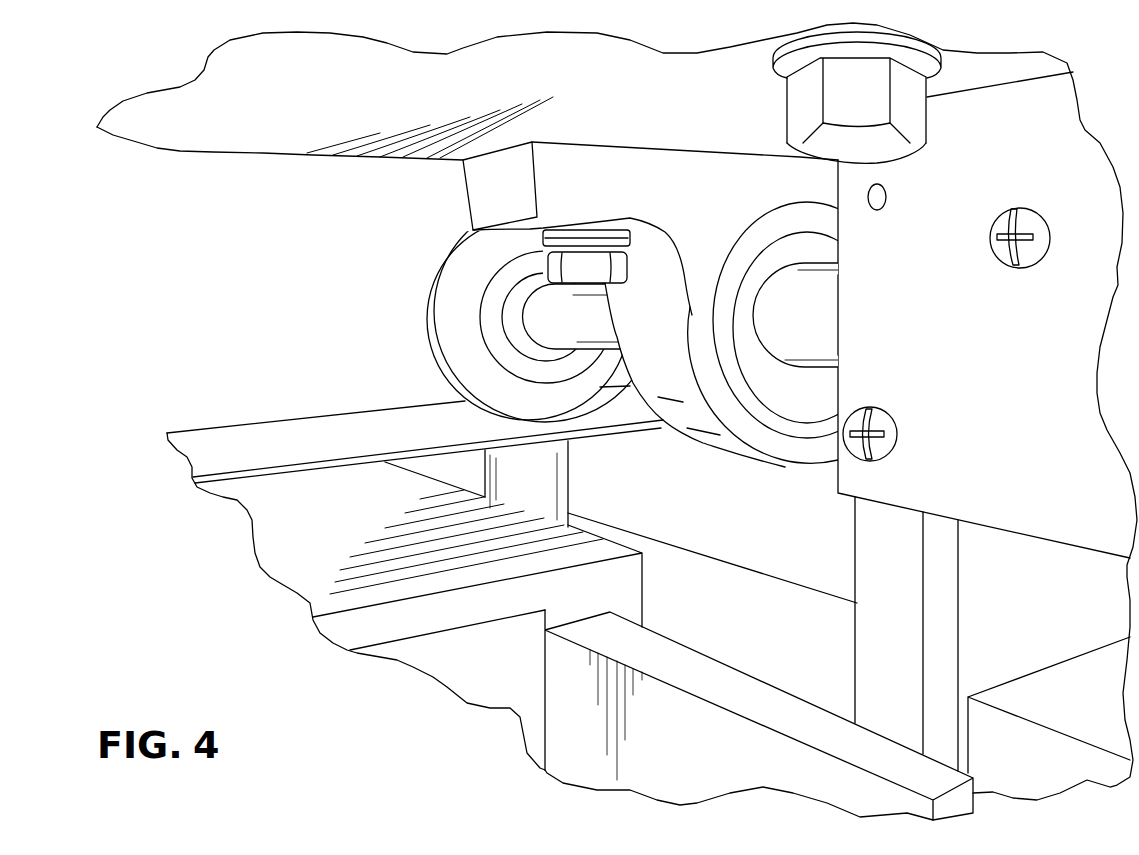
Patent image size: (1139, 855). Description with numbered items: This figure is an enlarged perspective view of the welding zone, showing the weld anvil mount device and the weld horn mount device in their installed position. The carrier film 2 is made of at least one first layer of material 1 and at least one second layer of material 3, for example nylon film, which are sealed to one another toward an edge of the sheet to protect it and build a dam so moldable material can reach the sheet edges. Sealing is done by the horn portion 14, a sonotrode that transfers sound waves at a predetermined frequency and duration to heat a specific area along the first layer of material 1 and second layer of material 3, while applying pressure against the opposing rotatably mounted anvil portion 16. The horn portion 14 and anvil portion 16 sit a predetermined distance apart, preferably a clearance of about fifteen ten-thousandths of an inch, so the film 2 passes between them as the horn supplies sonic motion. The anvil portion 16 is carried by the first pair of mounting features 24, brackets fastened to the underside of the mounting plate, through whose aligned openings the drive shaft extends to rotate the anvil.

The first layer of material 1 is at (385, 413).
The carrier film 2 is at (298, 436).
The second layer of material 3 is at (222, 484).
The horn portion 14 is at (470, 466).
The anvil portion 16 is at (447, 293).
The first pair of mounting features 24 is at (650, 281).